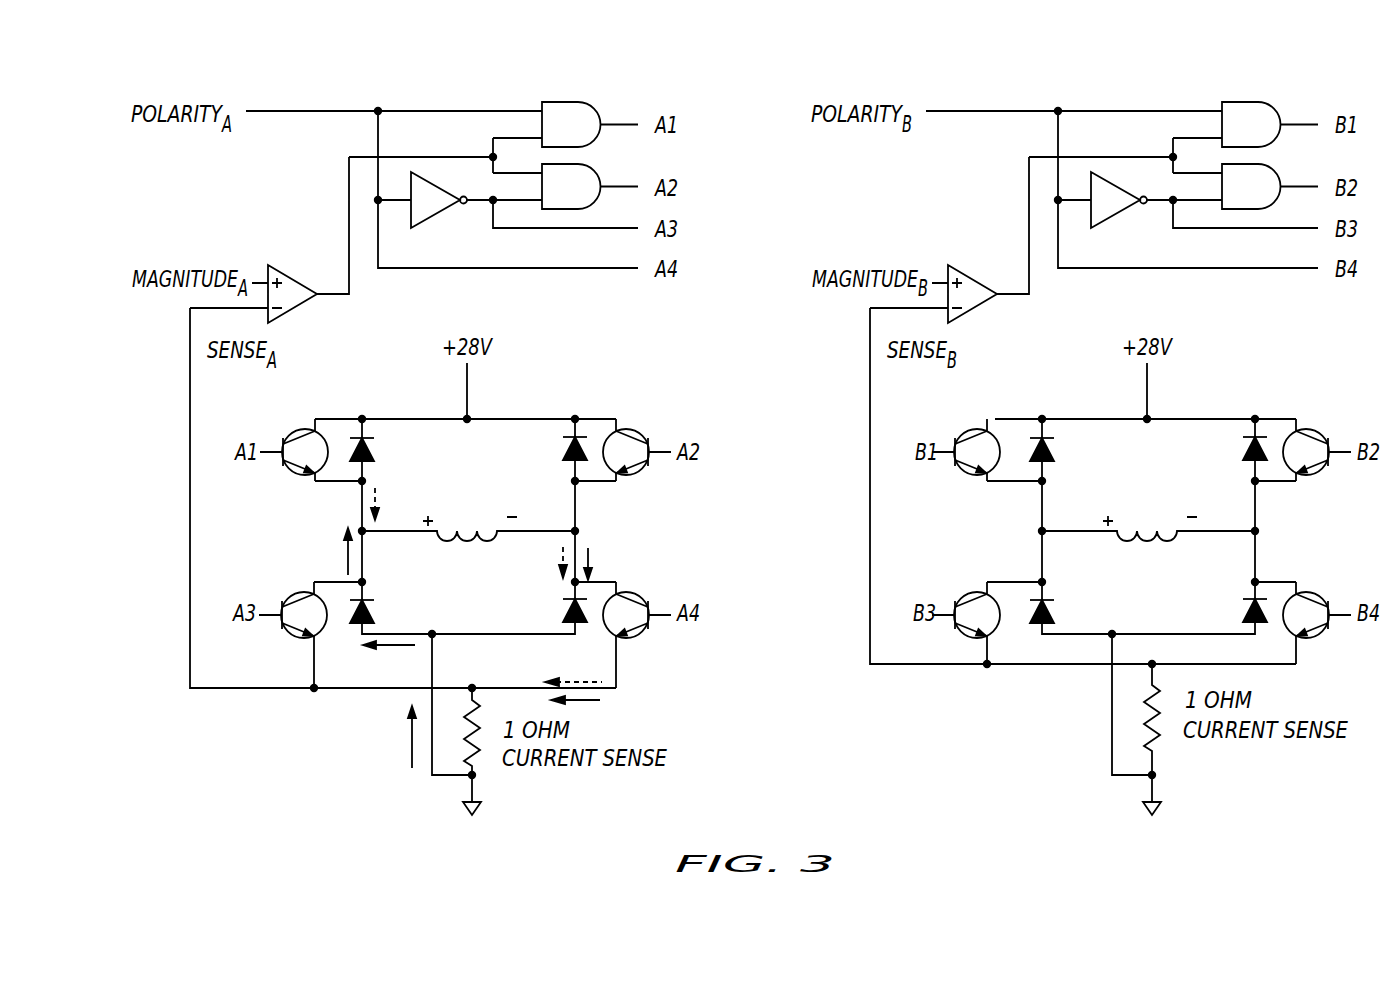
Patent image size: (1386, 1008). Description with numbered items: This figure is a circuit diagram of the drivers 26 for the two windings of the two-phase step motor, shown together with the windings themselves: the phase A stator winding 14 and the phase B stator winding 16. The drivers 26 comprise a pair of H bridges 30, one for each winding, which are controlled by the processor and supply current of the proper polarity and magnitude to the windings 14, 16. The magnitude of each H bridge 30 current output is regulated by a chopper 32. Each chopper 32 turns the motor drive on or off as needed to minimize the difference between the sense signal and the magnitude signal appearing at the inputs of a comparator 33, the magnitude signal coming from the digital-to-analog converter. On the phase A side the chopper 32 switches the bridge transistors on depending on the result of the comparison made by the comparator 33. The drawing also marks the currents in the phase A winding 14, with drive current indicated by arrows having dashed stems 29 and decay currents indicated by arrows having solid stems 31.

The stator winding 14 is at (471, 527).
The stator winding 16 is at (1151, 527).
The drivers 26 is at (907, 200).
The freewheeling current path 29 is at (378, 483).
The H bridge 30 is at (566, 390).
The arrows having solid stems 31 is at (347, 556).
The chopper 32 is at (506, 89).
The comparator 33 is at (296, 312).